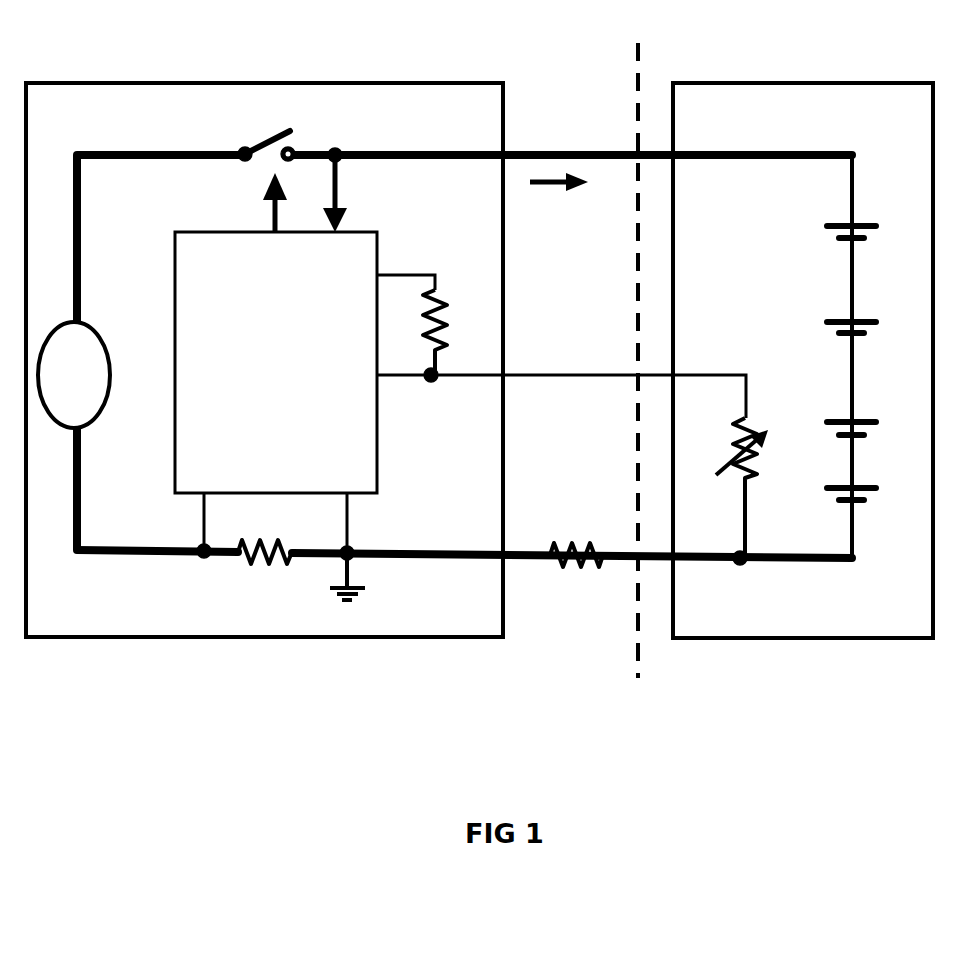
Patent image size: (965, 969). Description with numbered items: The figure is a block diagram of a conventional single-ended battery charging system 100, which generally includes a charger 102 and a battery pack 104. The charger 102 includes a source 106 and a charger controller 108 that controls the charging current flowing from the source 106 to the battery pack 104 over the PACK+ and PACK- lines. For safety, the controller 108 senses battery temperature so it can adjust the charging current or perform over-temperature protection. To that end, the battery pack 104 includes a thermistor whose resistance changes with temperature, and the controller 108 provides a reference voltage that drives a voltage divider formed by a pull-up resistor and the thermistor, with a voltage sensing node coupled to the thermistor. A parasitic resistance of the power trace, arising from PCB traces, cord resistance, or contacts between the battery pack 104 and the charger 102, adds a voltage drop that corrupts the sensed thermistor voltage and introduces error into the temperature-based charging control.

The single-ended battery charging system 100 is at (80, 48).
The charger 102 is at (278, 83).
The battery pack 104 is at (800, 83).
The source 106 is at (103, 355).
The charger controller 108 is at (244, 232).